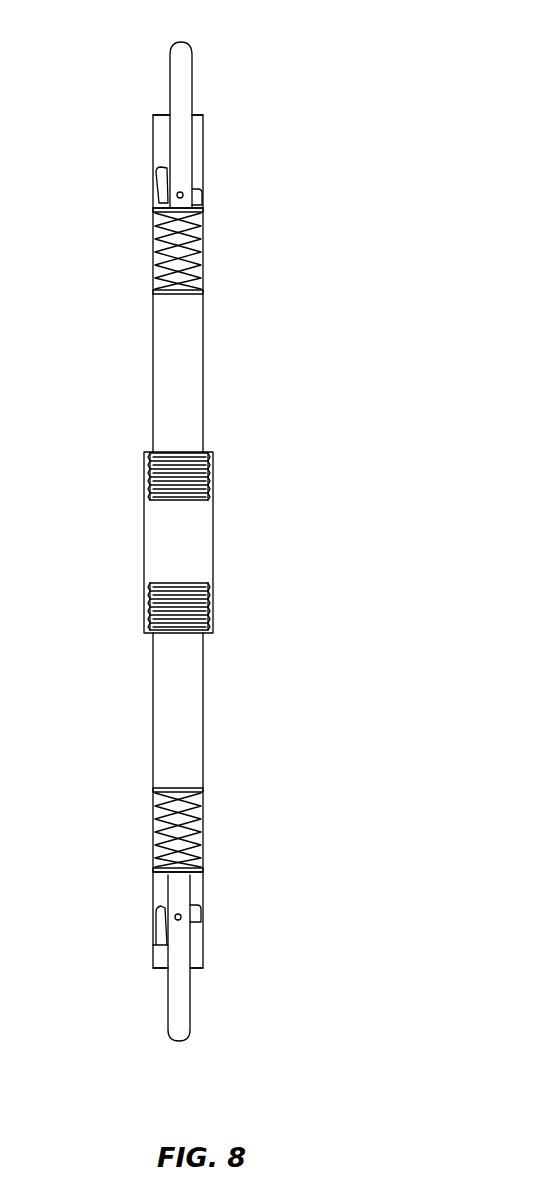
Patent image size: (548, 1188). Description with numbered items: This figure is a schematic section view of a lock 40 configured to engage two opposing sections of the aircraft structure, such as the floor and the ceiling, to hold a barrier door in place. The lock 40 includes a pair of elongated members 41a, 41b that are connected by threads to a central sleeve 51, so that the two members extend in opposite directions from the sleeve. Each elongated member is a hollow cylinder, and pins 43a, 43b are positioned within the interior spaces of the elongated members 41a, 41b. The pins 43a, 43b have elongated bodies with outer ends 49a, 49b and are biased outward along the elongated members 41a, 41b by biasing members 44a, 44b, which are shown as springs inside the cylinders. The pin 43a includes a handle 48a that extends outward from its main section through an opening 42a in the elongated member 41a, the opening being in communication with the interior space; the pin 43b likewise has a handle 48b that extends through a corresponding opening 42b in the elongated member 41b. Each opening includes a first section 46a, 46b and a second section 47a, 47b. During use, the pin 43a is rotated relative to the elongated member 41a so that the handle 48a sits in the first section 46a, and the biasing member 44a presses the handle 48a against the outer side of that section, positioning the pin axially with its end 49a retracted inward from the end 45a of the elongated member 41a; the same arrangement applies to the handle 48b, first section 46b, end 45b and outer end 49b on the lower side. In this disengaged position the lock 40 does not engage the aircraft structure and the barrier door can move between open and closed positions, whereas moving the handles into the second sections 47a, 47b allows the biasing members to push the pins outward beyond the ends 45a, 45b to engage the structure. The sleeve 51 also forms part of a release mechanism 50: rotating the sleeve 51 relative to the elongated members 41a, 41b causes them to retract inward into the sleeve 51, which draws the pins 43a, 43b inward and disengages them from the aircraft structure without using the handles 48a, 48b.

The lock 40 is at (398, 356).
The elongated member 41a is at (203, 382).
The elongated member 41b is at (203, 705).
The opening 42a is at (155, 210).
The opening 42b is at (157, 908).
The pin 43a is at (192, 72).
The pin 43b is at (190, 1008).
The biasing member 44a is at (190, 250).
The biasing member 44b is at (190, 837).
The end 45a is at (197, 115).
The end 45b is at (197, 968).
The first section 46a is at (202, 200).
The first section 46b is at (201, 915).
The second section 47a is at (157, 186).
The second section 47b is at (155, 932).
The handle 48a is at (183, 193).
The handle 48b is at (182, 920).
The outer end 49a is at (182, 40).
The outer end 49b is at (179, 1043).
The release mechanism 50 is at (94, 546).
The sleeve 51 is at (213, 550).